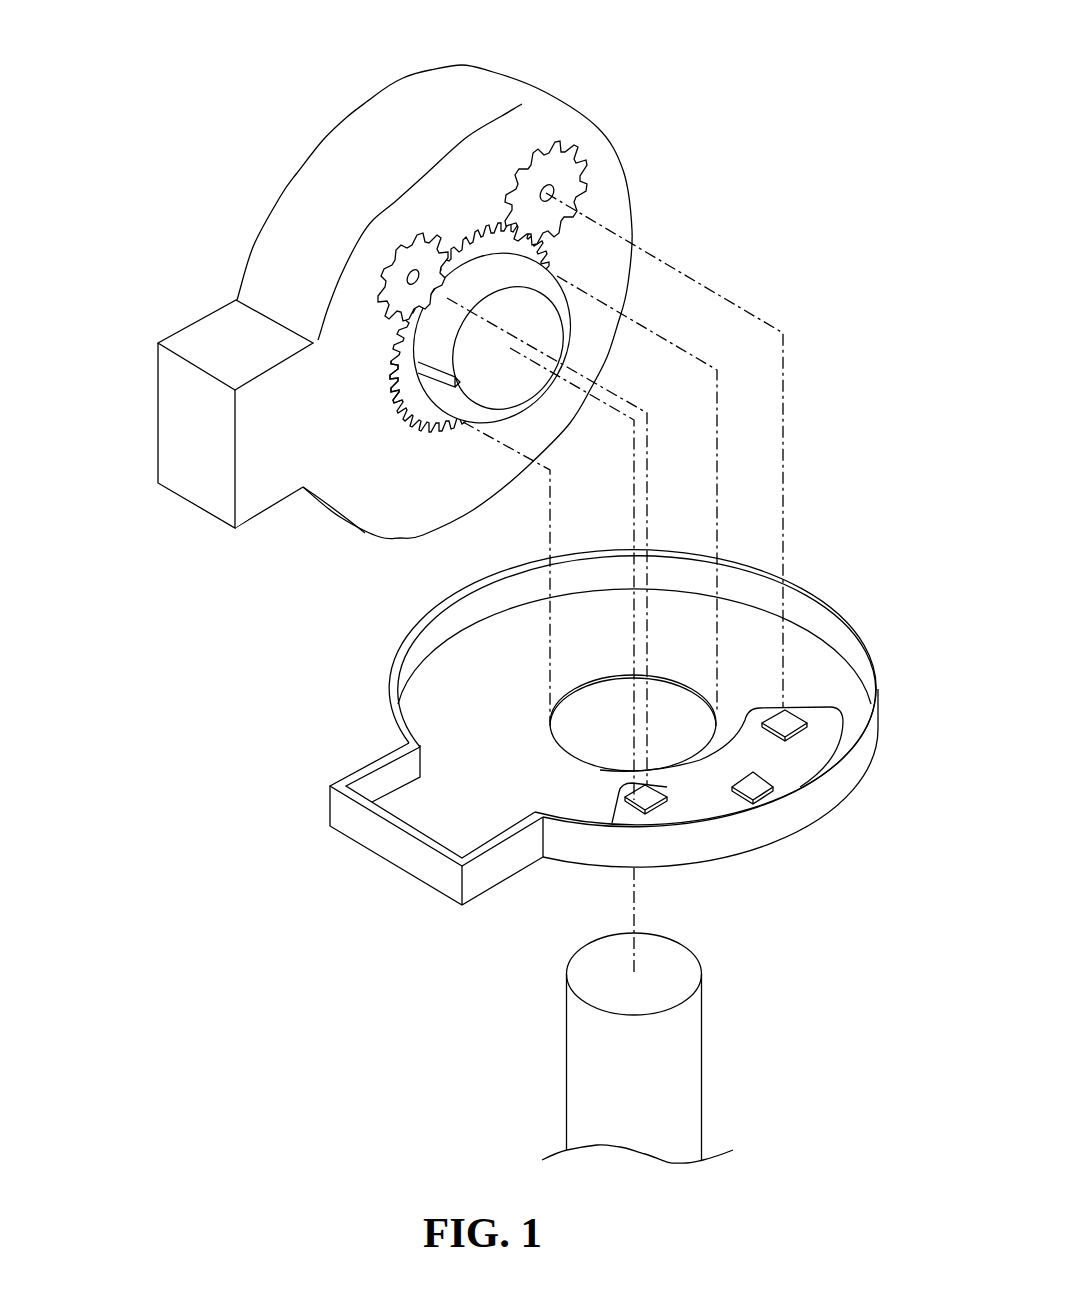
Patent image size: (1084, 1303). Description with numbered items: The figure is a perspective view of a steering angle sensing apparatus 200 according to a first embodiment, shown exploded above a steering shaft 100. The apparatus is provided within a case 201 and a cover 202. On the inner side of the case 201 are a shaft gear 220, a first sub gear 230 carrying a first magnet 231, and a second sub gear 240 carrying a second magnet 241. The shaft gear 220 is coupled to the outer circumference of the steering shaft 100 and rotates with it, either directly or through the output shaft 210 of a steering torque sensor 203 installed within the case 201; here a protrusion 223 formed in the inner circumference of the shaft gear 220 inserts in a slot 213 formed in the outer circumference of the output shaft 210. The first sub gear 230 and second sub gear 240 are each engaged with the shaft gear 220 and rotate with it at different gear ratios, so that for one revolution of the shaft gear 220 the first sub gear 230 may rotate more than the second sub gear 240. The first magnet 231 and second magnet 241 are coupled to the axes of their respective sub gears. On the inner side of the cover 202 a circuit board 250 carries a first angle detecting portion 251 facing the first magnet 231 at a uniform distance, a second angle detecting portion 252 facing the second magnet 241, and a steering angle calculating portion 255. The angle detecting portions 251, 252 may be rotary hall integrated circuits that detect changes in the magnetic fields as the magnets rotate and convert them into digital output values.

The steering shaft 100 is at (688, 1073).
The steering angle sensing apparatus 200 is at (654, 228).
The case 201 is at (182, 407).
The cover 202 is at (392, 848).
The steering torque sensor 203 is at (270, 164).
The output shaft 210 is at (566, 330).
The slot 213 is at (427, 433).
The shaft gear 220 is at (495, 222).
The protrusion 223 is at (383, 398).
The first sub gear 230 is at (381, 232).
The first magnet 231 is at (405, 274).
The second sub gear 240 is at (546, 140).
The second magnet 241 is at (556, 192).
The circuit board 250 is at (822, 715).
The first angle detecting portion 251 is at (667, 787).
The second angle detecting portion 252 is at (800, 732).
The steering angle calculating portion 255 is at (770, 793).